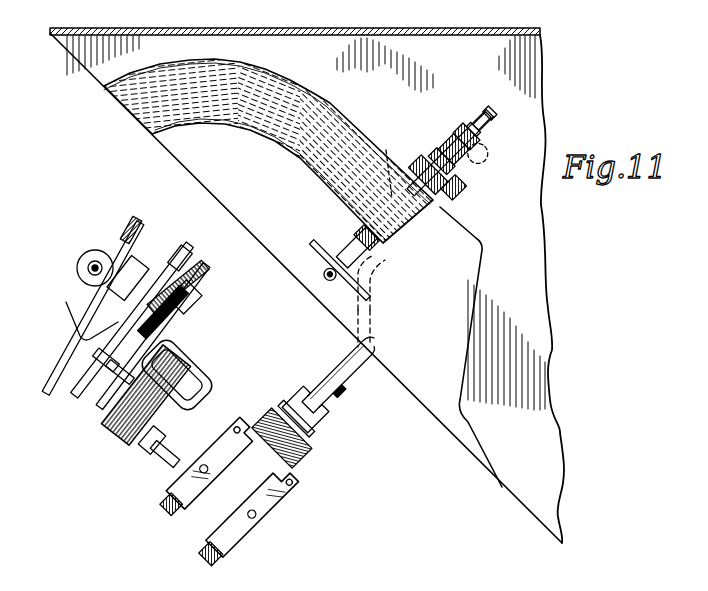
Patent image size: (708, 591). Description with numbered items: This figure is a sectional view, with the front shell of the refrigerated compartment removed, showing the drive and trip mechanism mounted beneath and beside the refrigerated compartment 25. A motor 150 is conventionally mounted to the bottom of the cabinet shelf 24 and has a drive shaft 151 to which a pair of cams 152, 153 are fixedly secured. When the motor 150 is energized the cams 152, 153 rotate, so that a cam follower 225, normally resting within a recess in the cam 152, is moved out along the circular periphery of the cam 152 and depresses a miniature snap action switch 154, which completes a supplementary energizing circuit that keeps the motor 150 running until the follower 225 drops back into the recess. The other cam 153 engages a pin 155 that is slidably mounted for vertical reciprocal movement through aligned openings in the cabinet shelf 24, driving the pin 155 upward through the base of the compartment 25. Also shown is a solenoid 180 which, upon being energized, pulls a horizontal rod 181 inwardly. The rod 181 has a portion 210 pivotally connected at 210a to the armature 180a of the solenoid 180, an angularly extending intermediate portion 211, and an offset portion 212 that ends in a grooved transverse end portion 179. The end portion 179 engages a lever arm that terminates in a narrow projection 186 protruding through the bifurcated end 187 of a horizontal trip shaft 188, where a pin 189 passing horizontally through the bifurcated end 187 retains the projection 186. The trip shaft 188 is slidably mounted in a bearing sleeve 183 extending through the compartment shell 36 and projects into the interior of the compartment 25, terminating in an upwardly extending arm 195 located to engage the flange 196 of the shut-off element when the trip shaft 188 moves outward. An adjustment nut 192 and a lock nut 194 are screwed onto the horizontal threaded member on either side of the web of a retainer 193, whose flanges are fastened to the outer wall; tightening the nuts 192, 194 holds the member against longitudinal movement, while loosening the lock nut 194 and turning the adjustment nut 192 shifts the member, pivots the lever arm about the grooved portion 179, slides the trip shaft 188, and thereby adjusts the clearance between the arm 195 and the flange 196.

The cabinet shelf 24 is at (526, 247).
The refrigerated compartment 25 is at (282, 194).
The compartment shell 36 is at (364, 122).
The motor 150 is at (98, 410).
The drive shaft 151 is at (143, 252).
The cam 152 is at (165, 258).
The cam 153 is at (131, 226).
The miniature snap action switch 154 is at (73, 302).
The pin 155 is at (96, 262).
The grooved transverse end portion 179 is at (486, 146).
The solenoid 180 is at (216, 518).
The armature 180a is at (369, 477).
The horizontal rod 181 is at (340, 393).
The bearing sleeve 183 is at (386, 152).
The narrow projection 186 is at (457, 137).
The bifurcated end 187 is at (490, 114).
The trip shaft 188 is at (352, 255).
The pin 189 is at (472, 120).
The adjustment nut 192 is at (418, 150).
The retainer 193 is at (455, 190).
The lock nut 194 is at (443, 147).
The upwardly extending arm 195 is at (328, 277).
The flange 196 is at (327, 247).
The rod portion 210 is at (347, 374).
The pivotal connection 210a is at (293, 393).
The angularly extending intermediate portion 211 is at (365, 322).
The offset portion 212 is at (378, 272).
The cam follower 225 is at (82, 338).